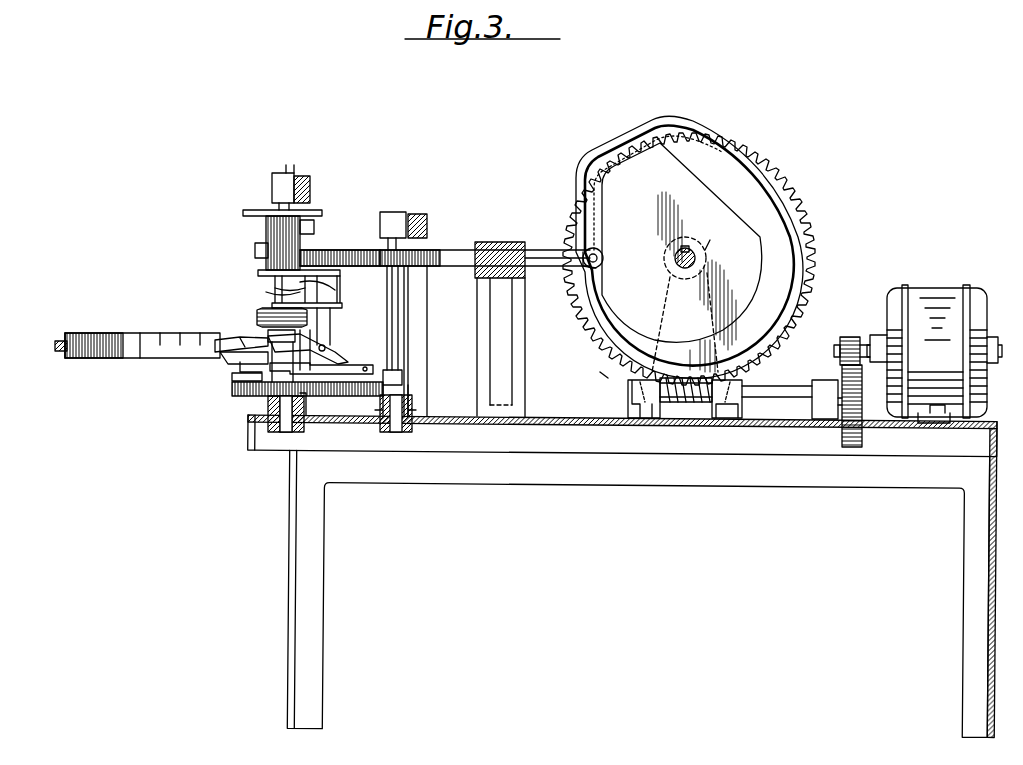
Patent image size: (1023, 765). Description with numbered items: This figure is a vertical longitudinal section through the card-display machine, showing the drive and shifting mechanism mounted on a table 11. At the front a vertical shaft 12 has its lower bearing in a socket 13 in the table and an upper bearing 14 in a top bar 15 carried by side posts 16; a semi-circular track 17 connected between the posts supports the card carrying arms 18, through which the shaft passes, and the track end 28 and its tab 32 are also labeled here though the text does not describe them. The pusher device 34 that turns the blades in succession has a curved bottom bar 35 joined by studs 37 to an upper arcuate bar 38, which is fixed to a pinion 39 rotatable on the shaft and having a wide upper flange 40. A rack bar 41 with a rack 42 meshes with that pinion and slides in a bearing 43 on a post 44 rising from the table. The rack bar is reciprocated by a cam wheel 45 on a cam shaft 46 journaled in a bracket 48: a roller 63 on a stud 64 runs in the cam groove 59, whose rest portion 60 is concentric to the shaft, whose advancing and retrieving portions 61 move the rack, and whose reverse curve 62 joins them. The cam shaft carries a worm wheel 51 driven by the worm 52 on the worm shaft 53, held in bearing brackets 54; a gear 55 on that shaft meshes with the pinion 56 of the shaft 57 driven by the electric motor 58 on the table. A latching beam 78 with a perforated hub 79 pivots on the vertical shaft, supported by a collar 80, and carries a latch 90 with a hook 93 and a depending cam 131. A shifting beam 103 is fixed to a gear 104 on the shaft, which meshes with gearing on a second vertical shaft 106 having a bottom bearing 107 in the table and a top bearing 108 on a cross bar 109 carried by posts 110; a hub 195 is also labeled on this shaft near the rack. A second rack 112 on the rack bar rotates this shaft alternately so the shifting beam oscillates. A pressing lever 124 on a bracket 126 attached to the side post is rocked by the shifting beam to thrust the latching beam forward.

The table 11 is at (614, 482).
The vertical shaft 12 is at (290, 168).
The socket 13 is at (280, 434).
The upper bearing 14 is at (272, 190).
The top bar 15 is at (310, 188).
The side posts 16 is at (319, 227).
The semi-circular track 17 is at (130, 338).
The card carrying arms 18 is at (252, 304).
The arm end 28 is at (68, 337).
The tab 32 is at (58, 352).
The pusher device 34 is at (344, 294).
The curved bottom bar 35 is at (325, 322).
The studs 37 is at (335, 282).
The upper arcuate bar 38 is at (258, 273).
The pinion 39 is at (266, 230).
The upper flange 40 is at (243, 213).
The rack bar 41 is at (340, 250).
The rack 42 is at (255, 250).
The bearing 43 is at (500, 244).
The post 44 is at (526, 360).
The cam wheel 45 is at (718, 188).
The cam shaft 46 is at (697, 256).
The bracket 48 is at (593, 370).
The worm wheel 51 is at (818, 245).
The worm 52 is at (682, 404).
The worm shaft 53 is at (775, 392).
The bearing brackets 54 is at (640, 390).
The gear 55 is at (852, 448).
The pinion 56 is at (842, 344).
The shaft 57 is at (870, 344).
The electric motor 58 is at (914, 300).
The cam groove 59 is at (719, 169).
The rest portion 60 is at (795, 290).
The advancing and retrieving portions 61 is at (700, 158).
The reverse curve 62 is at (622, 148).
The roller 63 is at (613, 256).
The stud 64 is at (590, 268).
The latching beam 78 is at (265, 332).
The hub 79 is at (268, 388).
The collar 80 is at (318, 350).
The latch 90 is at (240, 360).
The hook 93 is at (225, 338).
The shifting beam 103 is at (345, 366).
The gear 104 is at (250, 384).
The vertical shaft 106 is at (400, 332).
The bottom bearing 107 is at (398, 434).
The top bearing 108 is at (392, 214).
The cross bar 109 is at (420, 222).
The posts 110 is at (430, 352).
The second rack 112 is at (440, 254).
The pressing lever 124 is at (295, 340).
The bracket 126 is at (290, 290).
The depending cam 131 is at (242, 368).
The hub 195 is at (420, 386).